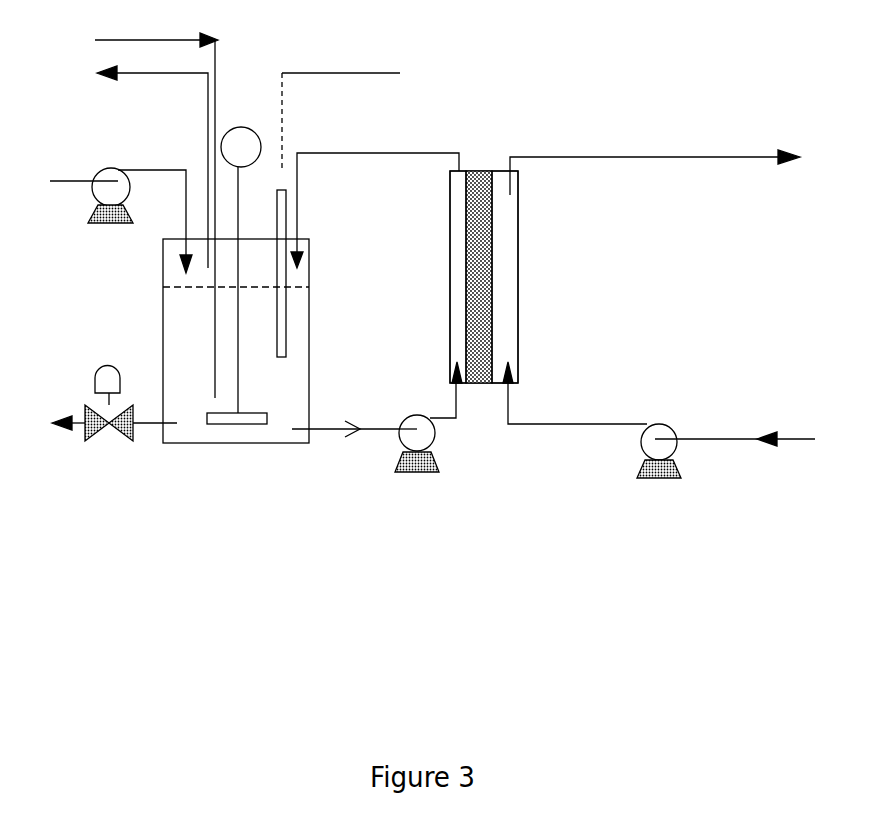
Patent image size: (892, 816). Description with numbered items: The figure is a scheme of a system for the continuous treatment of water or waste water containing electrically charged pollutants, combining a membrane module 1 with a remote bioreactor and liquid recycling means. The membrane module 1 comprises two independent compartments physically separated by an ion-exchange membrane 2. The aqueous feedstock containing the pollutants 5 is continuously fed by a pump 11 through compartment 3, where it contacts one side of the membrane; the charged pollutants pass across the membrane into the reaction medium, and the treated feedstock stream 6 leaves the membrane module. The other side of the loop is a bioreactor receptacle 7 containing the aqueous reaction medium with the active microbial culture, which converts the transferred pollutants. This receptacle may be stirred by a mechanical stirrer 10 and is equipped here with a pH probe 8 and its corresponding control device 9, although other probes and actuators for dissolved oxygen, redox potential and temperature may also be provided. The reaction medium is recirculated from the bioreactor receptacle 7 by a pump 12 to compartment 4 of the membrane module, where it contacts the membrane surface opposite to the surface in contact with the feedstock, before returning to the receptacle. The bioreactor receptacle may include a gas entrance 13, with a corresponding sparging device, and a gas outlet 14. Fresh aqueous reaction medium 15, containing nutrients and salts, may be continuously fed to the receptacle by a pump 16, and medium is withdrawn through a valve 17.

The membrane module 1 is at (518, 222).
The ion-exchange membrane 2 is at (478, 172).
The compartment 3 is at (500, 272).
The compartment 4 is at (455, 208).
The aqueous feedstock containing the pollutant(s) 5 is at (787, 438).
The treated feedstock stream 6 is at (768, 152).
The bioreactor receptacle 7 is at (309, 317).
The pH probe 8 is at (283, 186).
The control device 9 is at (362, 73).
The mechanical stirrer 10 is at (241, 127).
The pump 11 is at (652, 480).
The pump 12 is at (424, 474).
The gas entrance 13 is at (137, 209).
The gas outlet 14 is at (132, 162).
The fresh aqueous reaction medium 15 is at (67, 167).
The pump 16 is at (112, 168).
The valve 17 is at (97, 368).